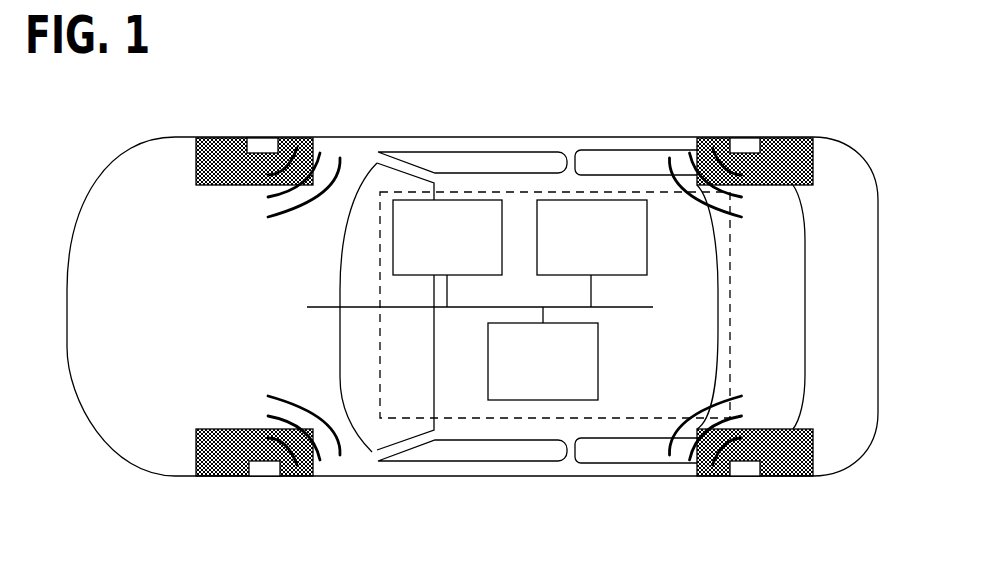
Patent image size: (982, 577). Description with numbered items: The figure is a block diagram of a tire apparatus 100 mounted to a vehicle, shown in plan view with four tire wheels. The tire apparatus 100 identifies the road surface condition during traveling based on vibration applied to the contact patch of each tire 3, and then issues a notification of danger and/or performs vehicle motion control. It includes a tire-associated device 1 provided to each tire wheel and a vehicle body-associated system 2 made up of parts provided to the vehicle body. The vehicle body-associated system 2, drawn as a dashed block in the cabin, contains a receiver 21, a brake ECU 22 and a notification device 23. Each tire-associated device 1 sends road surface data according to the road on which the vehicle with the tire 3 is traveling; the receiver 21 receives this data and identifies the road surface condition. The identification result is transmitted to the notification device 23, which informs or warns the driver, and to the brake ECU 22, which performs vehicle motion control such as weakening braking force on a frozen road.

The tire apparatus 100 is at (388, 110).
The tire-associated device 1 is at (259, 148).
The tire 3 is at (196, 163).
The vehicle body-associated system 2 is at (665, 192).
The receiver 21 is at (547, 400).
The brake ECU 22 is at (604, 200).
The notification device 23 is at (462, 200).